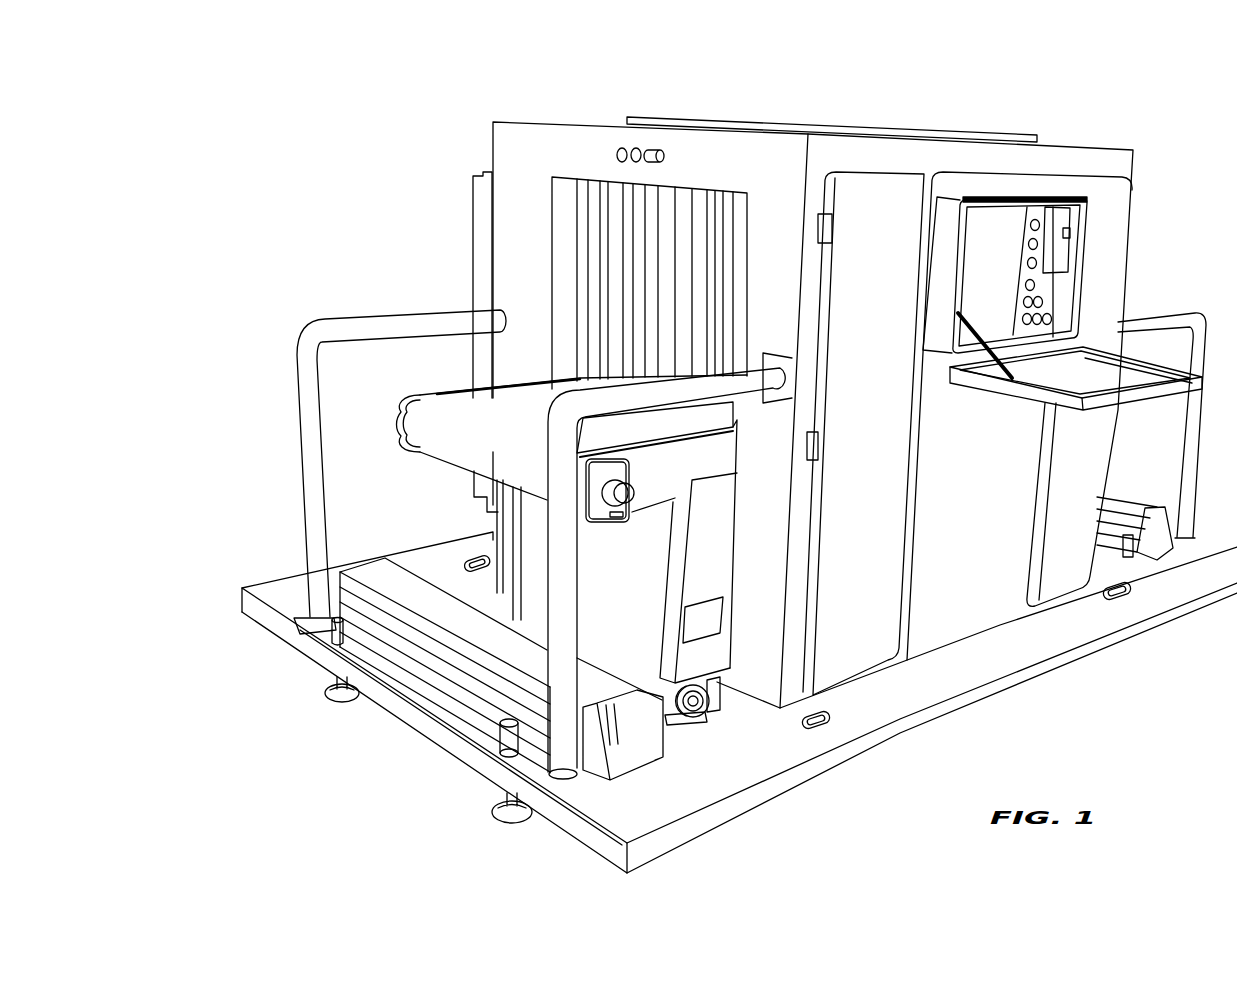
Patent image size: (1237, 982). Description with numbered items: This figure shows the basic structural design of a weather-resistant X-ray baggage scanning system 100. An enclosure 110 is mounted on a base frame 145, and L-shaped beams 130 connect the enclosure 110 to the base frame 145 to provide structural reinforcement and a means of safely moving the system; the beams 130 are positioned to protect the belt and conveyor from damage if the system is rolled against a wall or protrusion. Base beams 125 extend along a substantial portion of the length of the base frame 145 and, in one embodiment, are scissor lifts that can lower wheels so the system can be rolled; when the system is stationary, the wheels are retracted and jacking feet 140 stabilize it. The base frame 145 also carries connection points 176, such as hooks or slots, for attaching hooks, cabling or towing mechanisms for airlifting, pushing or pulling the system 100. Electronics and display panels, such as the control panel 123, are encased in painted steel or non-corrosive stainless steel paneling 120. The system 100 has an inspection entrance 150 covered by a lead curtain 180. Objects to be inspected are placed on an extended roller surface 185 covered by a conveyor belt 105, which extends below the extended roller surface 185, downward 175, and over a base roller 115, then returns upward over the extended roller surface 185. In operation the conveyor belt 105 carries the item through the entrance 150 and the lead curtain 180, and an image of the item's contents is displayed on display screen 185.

The X-ray baggage scanning system 100 is at (1212, 144).
The conveyor belt 105 is at (470, 405).
The enclosure 110 is at (810, 118).
The base roller 115 is at (705, 712).
The non-corrosive stainless steel paneling 120 is at (1060, 197).
The control panel 123 is at (1068, 263).
The base beams 125 is at (378, 578).
The beams 130 is at (333, 325).
The jacking feet 140 is at (330, 700).
The base frame 145 is at (248, 605).
The inspection entrance 150 is at (577, 188).
The downward belt path 175 is at (613, 517).
The connection points 176 is at (830, 725).
The lead curtain 180 is at (578, 246).
The extended roller surface 185 is at (978, 197).